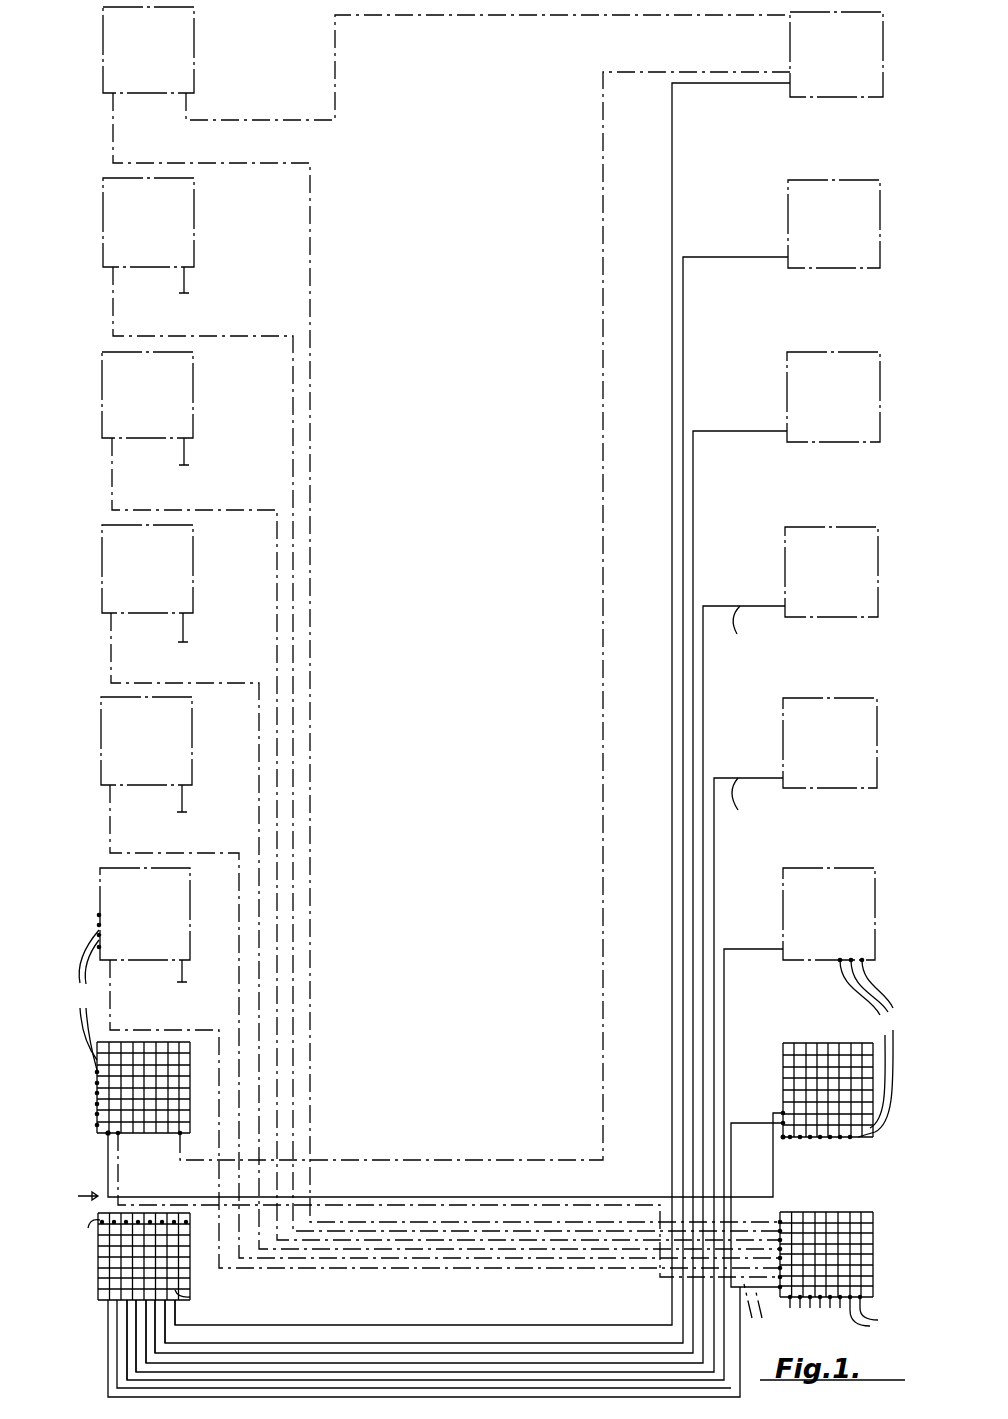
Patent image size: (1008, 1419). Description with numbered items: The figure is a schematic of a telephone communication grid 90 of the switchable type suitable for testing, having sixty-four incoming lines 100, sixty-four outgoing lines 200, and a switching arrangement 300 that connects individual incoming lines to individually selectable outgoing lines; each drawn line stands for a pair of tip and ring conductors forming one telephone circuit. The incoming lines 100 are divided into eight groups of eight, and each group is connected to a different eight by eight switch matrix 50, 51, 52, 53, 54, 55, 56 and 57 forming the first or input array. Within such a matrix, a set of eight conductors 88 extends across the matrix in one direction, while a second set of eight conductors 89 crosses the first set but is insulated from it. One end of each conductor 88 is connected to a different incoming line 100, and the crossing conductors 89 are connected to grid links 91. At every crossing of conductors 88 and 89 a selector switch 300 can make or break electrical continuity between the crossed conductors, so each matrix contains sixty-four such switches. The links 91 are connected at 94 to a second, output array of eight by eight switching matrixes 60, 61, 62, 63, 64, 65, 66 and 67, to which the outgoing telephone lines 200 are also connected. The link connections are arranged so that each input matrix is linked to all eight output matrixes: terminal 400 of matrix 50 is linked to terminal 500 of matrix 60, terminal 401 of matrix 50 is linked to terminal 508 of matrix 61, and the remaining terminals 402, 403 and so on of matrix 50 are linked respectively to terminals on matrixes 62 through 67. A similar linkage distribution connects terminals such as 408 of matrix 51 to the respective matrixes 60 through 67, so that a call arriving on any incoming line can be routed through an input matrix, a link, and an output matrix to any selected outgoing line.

The switch matrix 50 is at (190, 1283).
The switch matrix 51 is at (172, 1098).
The switch matrix 52 is at (170, 931).
The switch matrix 53 is at (178, 743).
The switch matrix 54 is at (180, 579).
The switch matrix 55 is at (176, 403).
The switch matrix 56 is at (172, 229).
The switch matrix 57 is at (175, 50).
The switching matrix 60 is at (873, 1223).
The switching matrix 61 is at (788, 1066).
The switching matrix 62 is at (795, 918).
The switching matrix 63 is at (803, 747).
The switching matrix 64 is at (806, 581).
The switching matrix 65 is at (806, 398).
The switching matrix 66 is at (801, 226).
The switching matrix 67 is at (806, 57).
The conductors 88 is at (183, 1258).
The crossing conductors 89 is at (190, 1297).
The telephone communication grid 90 is at (72, 1195).
The grid links 91 is at (180, 1030).
The link connections 94 is at (758, 976).
The incoming lines 100 is at (84, 1285).
The outgoing lines 200 is at (887, 1152).
The selector switches 300 is at (100, 1236).
The terminal 400 is at (112, 1304).
The terminal 401 is at (120, 1306).
The terminal 402 is at (140, 1350).
The terminal 403 is at (178, 1327).
The terminal 408 is at (104, 1136).
The terminal 500 is at (800, 1308).
The terminal 508 is at (783, 1137).